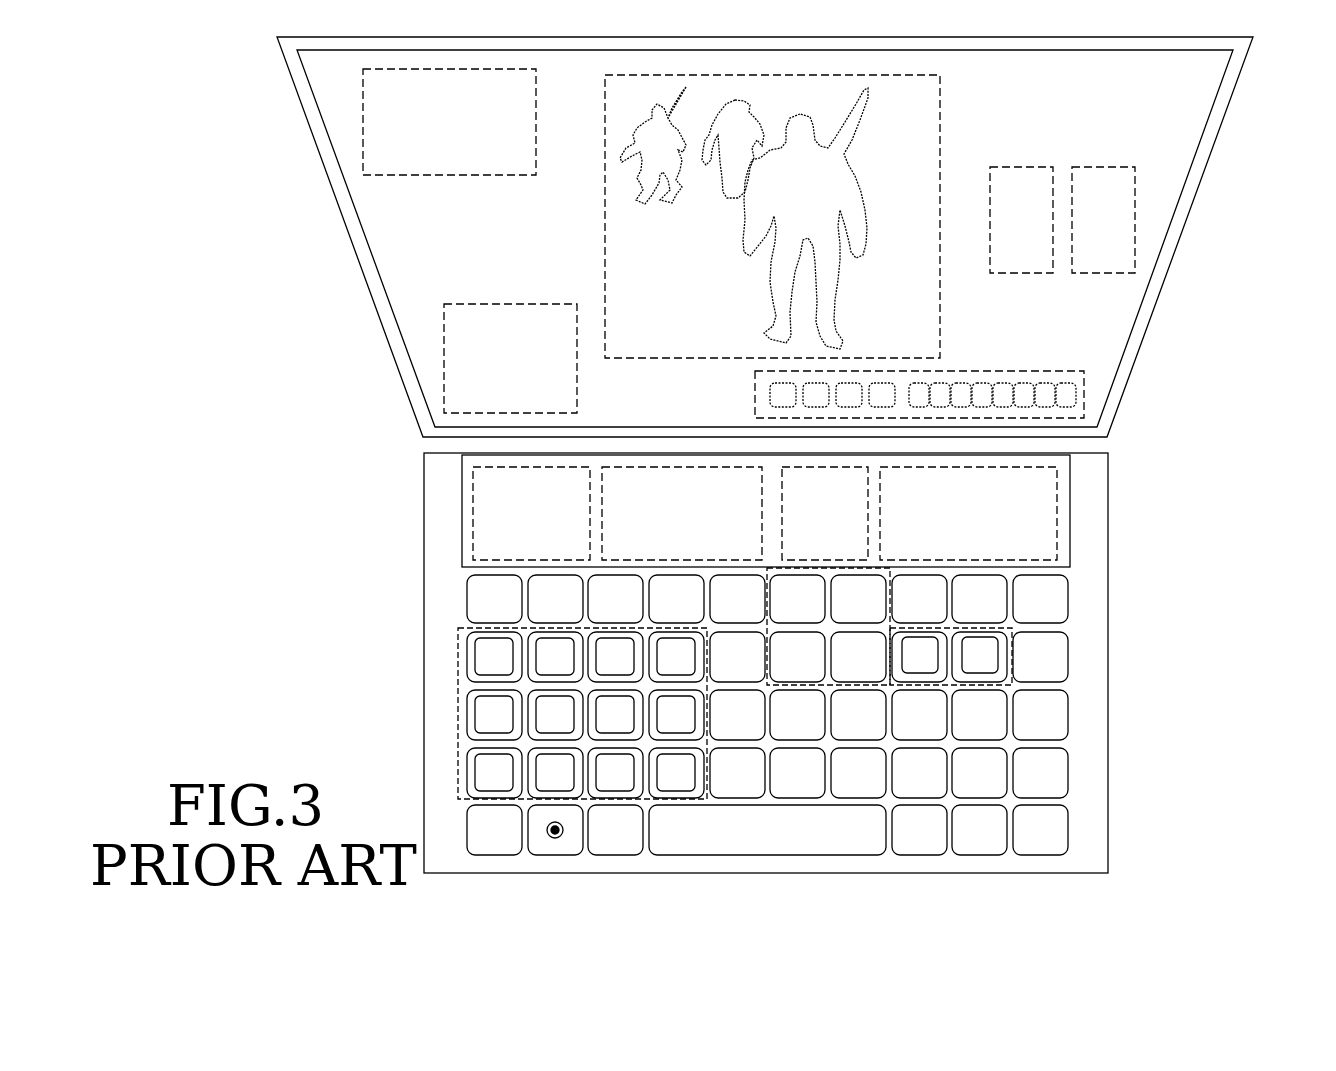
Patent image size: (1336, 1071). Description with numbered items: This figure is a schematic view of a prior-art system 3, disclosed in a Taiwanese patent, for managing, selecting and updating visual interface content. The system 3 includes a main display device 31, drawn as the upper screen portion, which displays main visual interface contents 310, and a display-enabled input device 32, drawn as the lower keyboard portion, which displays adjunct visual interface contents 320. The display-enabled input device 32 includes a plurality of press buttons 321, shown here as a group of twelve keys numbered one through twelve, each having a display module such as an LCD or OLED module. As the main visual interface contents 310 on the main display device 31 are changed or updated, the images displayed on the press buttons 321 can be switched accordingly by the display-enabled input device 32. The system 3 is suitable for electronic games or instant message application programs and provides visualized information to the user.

The system 3 is at (270, 72).
The main display device 31 is at (1192, 210).
The main visual interface contents 310 is at (1180, 135).
The display-enabled input device 32 is at (1108, 646).
The adjunct visual interface contents 320 is at (458, 703).
The press buttons 321 is at (484, 656).